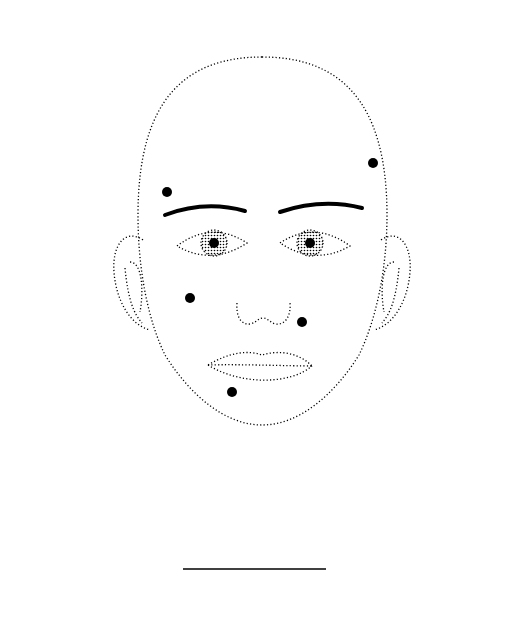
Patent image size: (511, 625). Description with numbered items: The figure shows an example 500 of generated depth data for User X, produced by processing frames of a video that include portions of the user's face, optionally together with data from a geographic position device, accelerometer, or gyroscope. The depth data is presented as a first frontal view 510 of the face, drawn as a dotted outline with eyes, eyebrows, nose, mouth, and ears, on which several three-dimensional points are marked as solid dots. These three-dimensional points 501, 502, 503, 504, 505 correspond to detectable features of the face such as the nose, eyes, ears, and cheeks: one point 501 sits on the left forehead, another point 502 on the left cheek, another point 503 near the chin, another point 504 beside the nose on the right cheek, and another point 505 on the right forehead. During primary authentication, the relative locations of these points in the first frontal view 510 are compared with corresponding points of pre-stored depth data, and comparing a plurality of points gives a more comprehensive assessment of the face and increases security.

The example of generated depth data 500 is at (268, 529).
The first frontal view 510 is at (350, 80).
The 3D point 501 is at (162, 192).
The 3D point 502 is at (185, 298).
The 3D point 503 is at (227, 392).
The 3D point 504 is at (308, 320).
The 3D point 505 is at (378, 161).